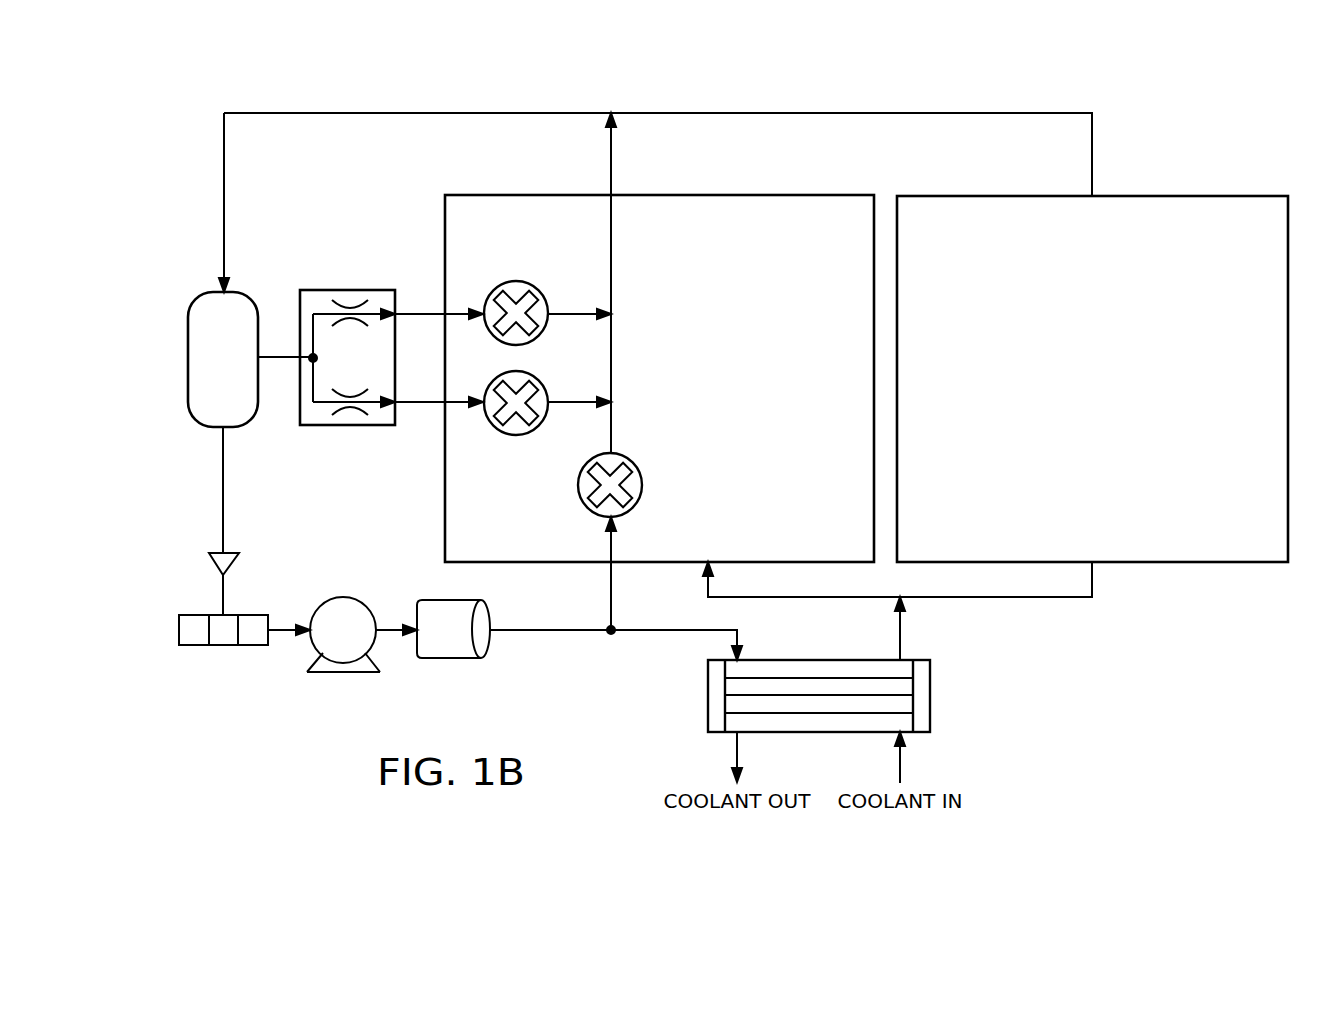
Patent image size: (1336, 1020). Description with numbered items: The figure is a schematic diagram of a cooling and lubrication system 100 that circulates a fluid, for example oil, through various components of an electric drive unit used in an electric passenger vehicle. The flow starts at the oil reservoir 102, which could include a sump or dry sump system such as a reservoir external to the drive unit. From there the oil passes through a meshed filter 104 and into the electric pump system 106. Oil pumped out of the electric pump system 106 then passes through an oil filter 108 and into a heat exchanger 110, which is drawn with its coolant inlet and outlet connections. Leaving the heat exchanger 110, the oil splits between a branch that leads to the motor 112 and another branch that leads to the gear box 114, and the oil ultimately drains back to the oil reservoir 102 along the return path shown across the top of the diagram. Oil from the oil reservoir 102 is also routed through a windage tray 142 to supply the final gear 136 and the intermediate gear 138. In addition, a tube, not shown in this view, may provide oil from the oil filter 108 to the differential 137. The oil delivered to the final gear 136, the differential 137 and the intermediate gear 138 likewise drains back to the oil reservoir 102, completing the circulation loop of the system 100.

The cooling and lubrication system 100 is at (1044, 693).
The oil reservoir 102 is at (188, 358).
The meshed filter 104 is at (193, 647).
The electric pump system 106 is at (343, 597).
The oil filter 108 is at (455, 662).
The heat exchanger 110 is at (708, 693).
The motor 112 is at (1257, 196).
The gear box 114 is at (510, 195).
The final gear 136 is at (503, 435).
The differential 137 is at (585, 508).
The intermediate gear 138 is at (510, 281).
The windage tray 142 is at (348, 290).